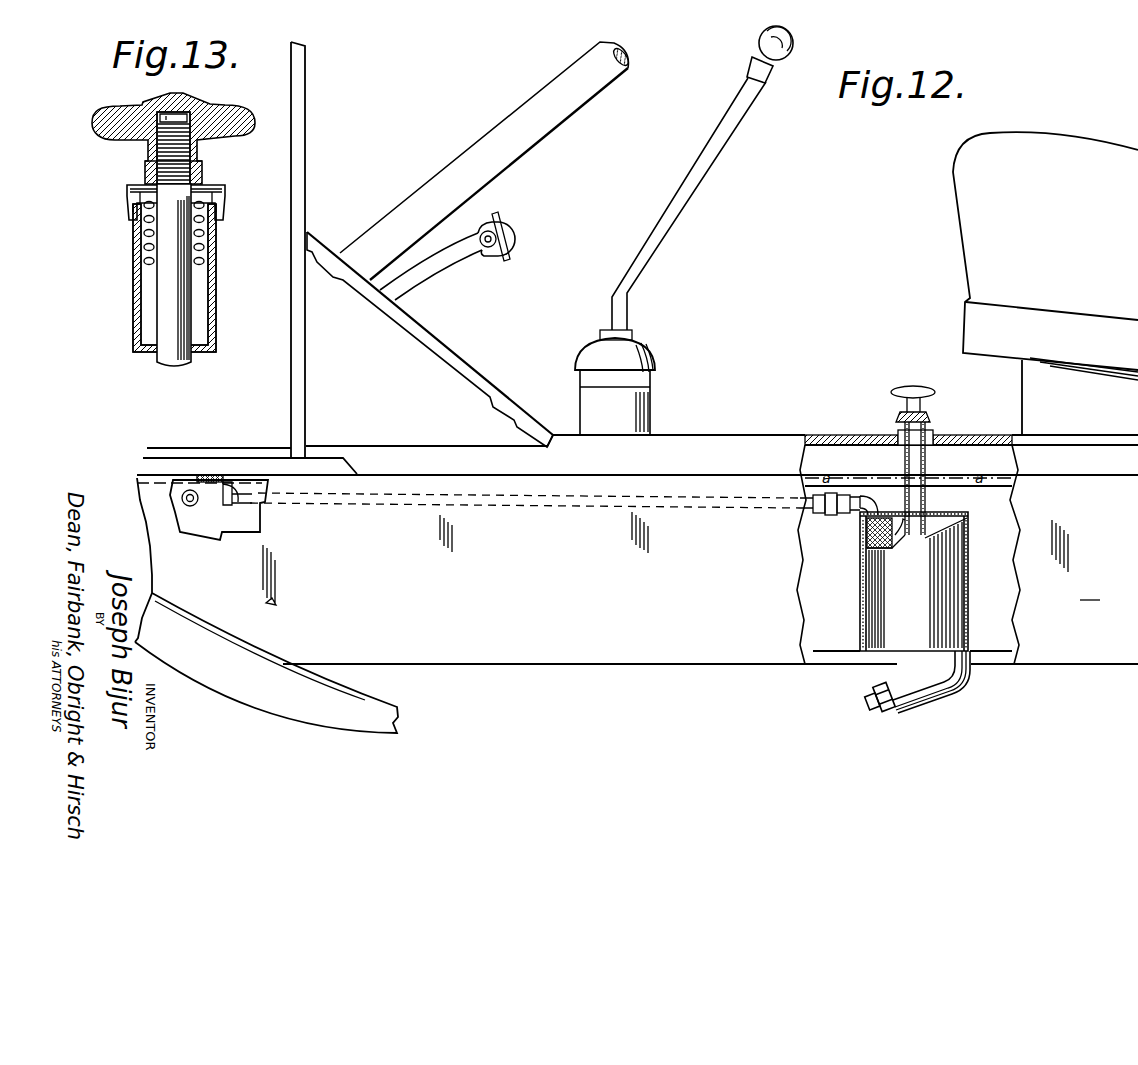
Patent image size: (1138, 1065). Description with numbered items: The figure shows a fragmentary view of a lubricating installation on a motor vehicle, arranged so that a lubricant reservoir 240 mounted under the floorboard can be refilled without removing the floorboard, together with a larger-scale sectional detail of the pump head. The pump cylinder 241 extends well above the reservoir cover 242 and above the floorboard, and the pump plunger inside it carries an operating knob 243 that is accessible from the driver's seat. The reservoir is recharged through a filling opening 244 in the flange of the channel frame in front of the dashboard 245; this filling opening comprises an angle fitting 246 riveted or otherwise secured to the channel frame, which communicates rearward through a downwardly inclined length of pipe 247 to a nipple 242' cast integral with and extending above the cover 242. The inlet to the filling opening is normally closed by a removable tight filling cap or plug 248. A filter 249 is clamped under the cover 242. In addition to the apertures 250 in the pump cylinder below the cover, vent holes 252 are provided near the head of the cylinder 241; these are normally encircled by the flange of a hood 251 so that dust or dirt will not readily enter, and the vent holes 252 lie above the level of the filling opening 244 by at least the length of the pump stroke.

In FIG. 12, the reservoir 240 is at (884, 620).
In FIG. 13, the pump cylinder 241 is at (216, 308).
In FIG. 12, the pump cylinder 241 is at (928, 456).
In FIG. 12, the reservoir cover 242 is at (935, 570).
In FIG. 12, the nipple 242' is at (839, 448).
In FIG. 13, the operating knob 243 is at (221, 112).
In FIG. 12, the operating knob 243 is at (911, 386).
In FIG. 12, the filling opening 244 is at (230, 484).
In FIG. 12, the dashboard 245 is at (300, 371).
In FIG. 12, the angle fitting 246 is at (208, 505).
In FIG. 12, the length of pipe 247 is at (396, 506).
In FIG. 12, the filling cap or plug 248 is at (205, 475).
In FIG. 12, the filter 249 is at (866, 534).
In FIG. 12, the apertures 250 is at (902, 522).
In FIG. 13, the hood 251 is at (226, 189).
In FIG. 13, the vent holes 252 is at (127, 200).